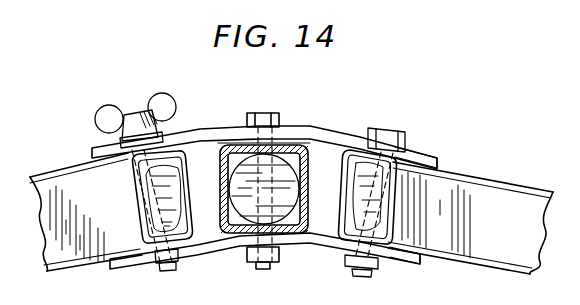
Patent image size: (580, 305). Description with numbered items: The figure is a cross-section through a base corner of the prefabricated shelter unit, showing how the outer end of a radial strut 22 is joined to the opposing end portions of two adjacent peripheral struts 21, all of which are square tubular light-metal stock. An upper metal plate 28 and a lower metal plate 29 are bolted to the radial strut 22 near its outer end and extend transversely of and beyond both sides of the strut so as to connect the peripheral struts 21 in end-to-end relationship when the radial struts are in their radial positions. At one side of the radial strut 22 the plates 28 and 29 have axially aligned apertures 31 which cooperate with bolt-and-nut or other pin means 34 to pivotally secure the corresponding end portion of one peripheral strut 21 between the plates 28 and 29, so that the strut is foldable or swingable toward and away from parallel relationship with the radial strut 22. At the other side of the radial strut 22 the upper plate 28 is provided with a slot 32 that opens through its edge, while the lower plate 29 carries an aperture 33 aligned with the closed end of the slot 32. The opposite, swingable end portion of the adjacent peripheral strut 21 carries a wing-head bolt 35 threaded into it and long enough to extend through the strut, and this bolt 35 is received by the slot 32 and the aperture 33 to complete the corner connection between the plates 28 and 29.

The peripheral struts 21 is at (63, 142).
The radial struts 22 is at (228, 177).
The upper metal plate 28 is at (330, 134).
The lower metal plate 29 is at (324, 250).
The axially aligned apertures 31 is at (415, 160).
The slot 32 is at (155, 147).
The aperture 33 is at (146, 266).
The pin means 34 is at (393, 156).
The wing-head bolt 35 is at (108, 106).